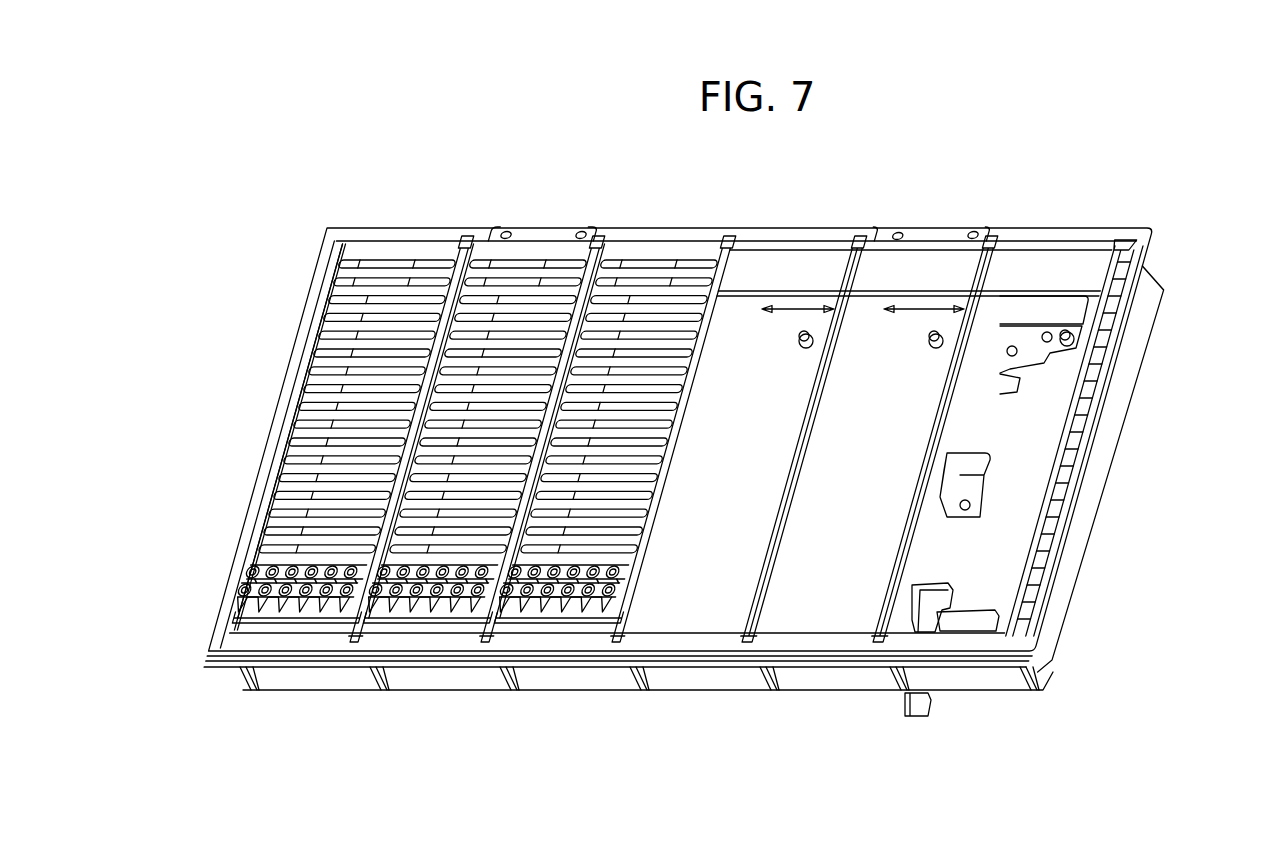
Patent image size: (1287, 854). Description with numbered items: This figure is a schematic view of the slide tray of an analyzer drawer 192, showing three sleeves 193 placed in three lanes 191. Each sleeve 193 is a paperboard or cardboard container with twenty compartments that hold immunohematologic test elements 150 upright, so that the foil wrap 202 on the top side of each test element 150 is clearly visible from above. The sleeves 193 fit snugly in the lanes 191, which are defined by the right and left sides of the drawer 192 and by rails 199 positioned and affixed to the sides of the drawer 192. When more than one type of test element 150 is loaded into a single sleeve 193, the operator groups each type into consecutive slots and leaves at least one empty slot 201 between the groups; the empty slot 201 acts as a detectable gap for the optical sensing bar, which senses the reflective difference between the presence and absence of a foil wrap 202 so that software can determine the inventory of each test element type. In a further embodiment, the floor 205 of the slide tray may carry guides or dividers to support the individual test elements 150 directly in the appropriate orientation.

The drawer 192 is at (1087, 508).
The sleeve 193 is at (416, 458).
The empty slot 201 is at (697, 278).
The lane 191 is at (922, 310).
The rail 199 is at (977, 367).
The test element 150 is at (363, 610).
The foil wrap at top side of test element 202 is at (446, 608).
The floor of slide tray 205 is at (818, 603).